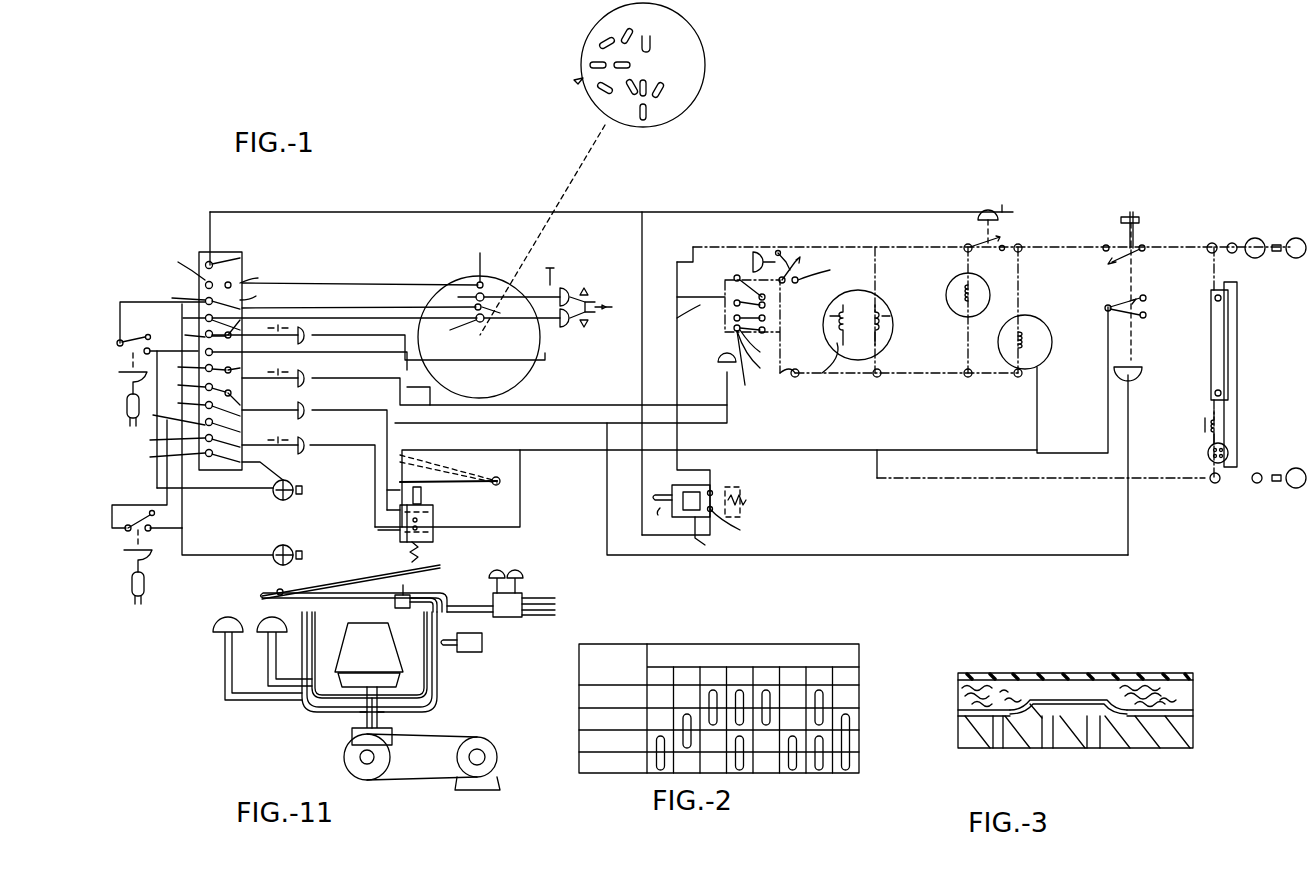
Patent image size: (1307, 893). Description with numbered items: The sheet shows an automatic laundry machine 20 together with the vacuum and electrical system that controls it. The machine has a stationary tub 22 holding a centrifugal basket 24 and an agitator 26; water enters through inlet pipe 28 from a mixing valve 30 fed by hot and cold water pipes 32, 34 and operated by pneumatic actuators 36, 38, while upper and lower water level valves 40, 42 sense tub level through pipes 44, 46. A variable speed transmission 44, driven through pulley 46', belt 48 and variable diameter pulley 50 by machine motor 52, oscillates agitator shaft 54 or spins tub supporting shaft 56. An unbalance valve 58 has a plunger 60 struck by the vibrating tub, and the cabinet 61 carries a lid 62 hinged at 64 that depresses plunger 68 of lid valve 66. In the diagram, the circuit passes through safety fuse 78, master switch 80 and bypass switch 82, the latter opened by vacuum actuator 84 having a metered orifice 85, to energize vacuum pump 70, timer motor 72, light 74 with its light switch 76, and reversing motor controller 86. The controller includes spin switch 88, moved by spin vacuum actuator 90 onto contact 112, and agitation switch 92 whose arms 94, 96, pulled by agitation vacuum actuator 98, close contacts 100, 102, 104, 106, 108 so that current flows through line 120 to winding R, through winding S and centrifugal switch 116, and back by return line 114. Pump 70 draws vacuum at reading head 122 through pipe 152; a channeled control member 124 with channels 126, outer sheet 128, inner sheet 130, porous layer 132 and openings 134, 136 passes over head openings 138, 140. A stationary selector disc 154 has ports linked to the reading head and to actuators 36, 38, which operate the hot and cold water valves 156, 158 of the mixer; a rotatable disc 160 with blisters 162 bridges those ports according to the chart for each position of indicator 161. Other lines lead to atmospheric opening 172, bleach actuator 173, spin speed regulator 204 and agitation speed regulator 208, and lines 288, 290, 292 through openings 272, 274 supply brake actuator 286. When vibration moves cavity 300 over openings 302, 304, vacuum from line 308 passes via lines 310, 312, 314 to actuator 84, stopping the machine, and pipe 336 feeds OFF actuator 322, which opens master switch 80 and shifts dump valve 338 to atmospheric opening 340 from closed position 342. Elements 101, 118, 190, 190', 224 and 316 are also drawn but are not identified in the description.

In FIG. 11, the automatic laundry machine 20 is at (493, 690).
In FIG. 11, the stationary tub 22 is at (437, 625).
In FIG. 11, the centrifugal basket 24 is at (320, 632).
In FIG. 11, the agitator 26 is at (352, 652).
In FIG. 11, the inlet pipe 28 is at (478, 605).
In FIG. 1, the mixing valve 30 is at (614, 306).
In FIG. 11, the mixing valve 30 is at (507, 617).
In FIG. 11, the hot water pipe 32 is at (548, 595).
In FIG. 11, the cold water pipe 34 is at (540, 617).
In FIG. 1, the hot water pneumatic actuator 36 is at (555, 287).
In FIG. 11, the hot water pneumatic actuator 36 is at (494, 574).
In FIG. 1, the cold water pneumatic actuator 38 is at (558, 312).
In FIG. 11, the cold water pneumatic actuator 38 is at (520, 573).
In FIG. 1, the upper water level control valve 40 is at (119, 376).
In FIG. 11, the upper water level control valve 40 is at (262, 615).
In FIG. 1, the lower water level control valve 42 is at (124, 552).
In FIG. 11, the lower water level control valve 42 is at (234, 605).
In FIG. 1, the variable speed transmission 44 is at (130, 595).
In FIG. 11, the variable speed transmission 44 is at (262, 660).
In FIG. 11, the pipe 46 is at (246, 646).
In FIG. 11, the constant diameter pulley 46' is at (328, 746).
In FIG. 11, the belt 48 is at (415, 732).
In FIG. 11, the variable diameter pulley 50 is at (490, 742).
In FIG. 1, the machine motor 52 is at (855, 360).
In FIG. 11, the machine motor 52 is at (492, 760).
In FIG. 11, the agitator shaft 54 is at (360, 715).
In FIG. 11, the tub supporting shaft 56 is at (360, 722).
In FIG. 1, the unbalance valve 58 is at (653, 518).
In FIG. 11, the unbalance valve 58 is at (478, 652).
In FIG. 1, the plunger 60 is at (660, 490).
In FIG. 11, the plunger 60 is at (450, 648).
In FIG. 11, the cabinet 61 is at (285, 600).
In FIG. 1, the lid 62 is at (410, 480).
In FIG. 11, the lid 62 is at (350, 578).
In FIG. 1, the hinge 64 is at (496, 486).
In FIG. 11, the hinge 64 is at (281, 580).
In FIG. 1, the lid valve 66 is at (433, 528).
In FIG. 11, the lid valve 66 is at (382, 588).
In FIG. 1, the plunger 68 is at (421, 495).
In FIG. 11, the plunger 68 is at (410, 585).
In FIG. 1, the vacuum pump and motor unit 70 is at (1050, 355).
In FIG. 1, the timer motor 72 is at (990, 295).
In FIG. 1, the illuminating light 74 is at (1228, 345).
In FIG. 1, the light switch 76 is at (1228, 450).
In FIG. 1, the safety fuse 78 is at (1252, 225).
In FIG. 1, the manual master switch 80 is at (1110, 240).
In FIG. 1, the bypass switch 82 is at (985, 262).
In FIG. 1, the bypass vacuum actuator 84 is at (975, 225).
In FIG. 1, the metered orifice 85 is at (1010, 210).
In FIG. 1, the reversing motor controller 86 is at (775, 385).
In FIG. 1, the spin switch 88 is at (798, 278).
In FIG. 1, the spin vacuum actuator 90 is at (760, 255).
In FIG. 1, the agitation control switch 92 is at (732, 320).
In FIG. 1, the switch arm 94 is at (733, 276).
In FIG. 1, the switch arm 96 is at (732, 304).
In FIG. 1, the agitation vacuum actuator 98 is at (716, 364).
In FIG. 1, the contact 100 is at (763, 340).
In FIG. 1, the relay switch 101 is at (674, 322).
In FIG. 1, the contact 102 is at (765, 353).
In FIG. 1, the line contact 104 is at (753, 364).
In FIG. 1, the contact 106 is at (745, 260).
In FIG. 1, the contact 108 is at (685, 297).
In FIG. 1, the line contact 112 is at (775, 250).
In FIG. 1, the return line 114 is at (925, 481).
In FIG. 1, the centrifugal switch 116 is at (822, 373).
In FIG. 1, the contact 118 is at (830, 265).
In FIG. 1, the line 120 is at (868, 268).
In FIG. 1, the reading head 122 is at (232, 250).
In FIG. 3, the reading head 122 is at (1150, 748).
In FIG. 3, the channeled control member 124 is at (1208, 712).
In FIG. 3, the channels 126 is at (1072, 698).
In FIG. 3, the outer plastic sheet 128 is at (1185, 675).
In FIG. 3, the inner plastic sheet 130 is at (972, 716).
In FIG. 3, the porous flexible layer 132 is at (1145, 680).
In FIG. 3, the opening 134 is at (1000, 684).
In FIG. 3, the opening 136 is at (1010, 716).
In FIG. 3, the reading head opening 138 is at (998, 748).
In FIG. 3, the reading head opening 140 is at (1048, 750).
In FIG. 1, the pipe 152 is at (752, 438).
In FIG. 1, the selector valve construction 154 is at (432, 255).
In FIG. 1, the hot water valve 156 is at (598, 298).
In FIG. 1, the cold water valve 158 is at (595, 312).
In FIG. 1, the rotatable selector disc 160 is at (705, 68).
In FIG. 1, the indicator 161 is at (580, 82).
In FIG. 1, the blisters 162 is at (650, 50).
In FIG. 2, the blisters 162 is at (823, 700).
In FIG. 1, the valve opening 172 is at (120, 327).
In FIG. 1, the bleach actuator 173 is at (313, 335).
In FIG. 1, the switch 190 is at (138, 350).
In FIG. 1, the switch 190' is at (149, 501).
In FIG. 1, the spin speed regulator 204 is at (290, 548).
In FIG. 1, the agitation speed regulator 208 is at (290, 497).
In FIG. 1, the conductor 224 is at (300, 458).
In FIG. 1, the opening 272 is at (433, 540).
In FIG. 1, the opening 274 is at (380, 532).
In FIG. 1, the brake actuator 286 is at (313, 410).
In FIG. 1, the line 288 is at (520, 490).
In FIG. 1, the line 290 is at (384, 492).
In FIG. 1, the line 292 is at (312, 448).
In FIG. 1, the cavity 300 is at (713, 536).
In FIG. 1, the opening 302 is at (741, 526).
In FIG. 1, the opening 304 is at (712, 490).
In FIG. 1, the line 308 is at (680, 395).
In FIG. 1, the line 310 is at (700, 470).
In FIG. 1, the line 312 is at (655, 488).
In FIG. 1, the line 314 is at (360, 200).
In FIG. 1, the conductor 316 is at (552, 404).
In FIG. 1, the OFF actuator 322 is at (1140, 372).
In FIG. 1, the pipe 336 is at (313, 378).
In FIG. 1, the dump valve 338 is at (1128, 300).
In FIG. 1, the atmospheric opening 340 is at (1146, 318).
In FIG. 1, the closed position 342 is at (1146, 295).